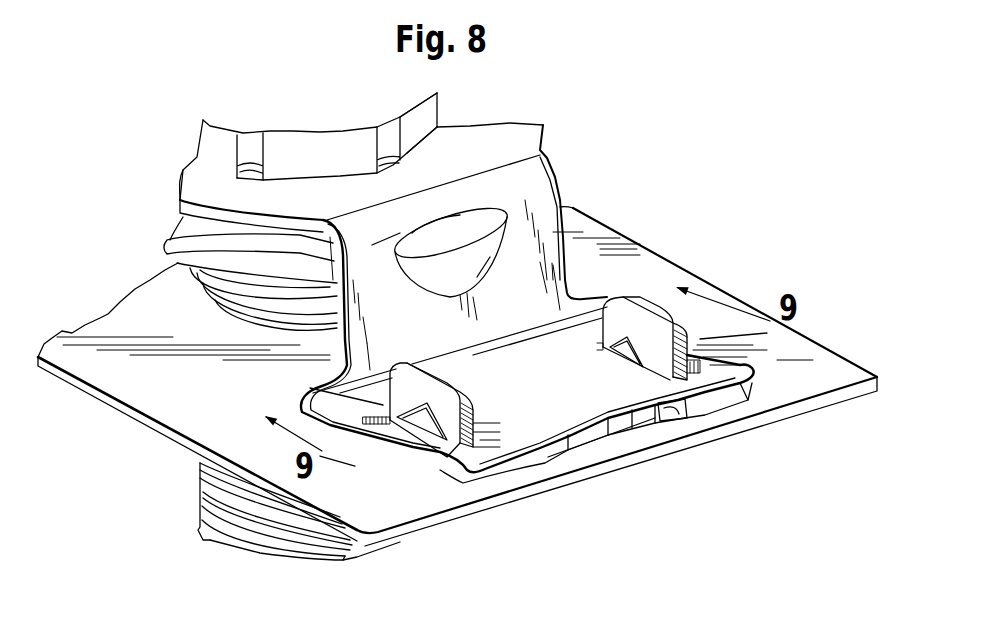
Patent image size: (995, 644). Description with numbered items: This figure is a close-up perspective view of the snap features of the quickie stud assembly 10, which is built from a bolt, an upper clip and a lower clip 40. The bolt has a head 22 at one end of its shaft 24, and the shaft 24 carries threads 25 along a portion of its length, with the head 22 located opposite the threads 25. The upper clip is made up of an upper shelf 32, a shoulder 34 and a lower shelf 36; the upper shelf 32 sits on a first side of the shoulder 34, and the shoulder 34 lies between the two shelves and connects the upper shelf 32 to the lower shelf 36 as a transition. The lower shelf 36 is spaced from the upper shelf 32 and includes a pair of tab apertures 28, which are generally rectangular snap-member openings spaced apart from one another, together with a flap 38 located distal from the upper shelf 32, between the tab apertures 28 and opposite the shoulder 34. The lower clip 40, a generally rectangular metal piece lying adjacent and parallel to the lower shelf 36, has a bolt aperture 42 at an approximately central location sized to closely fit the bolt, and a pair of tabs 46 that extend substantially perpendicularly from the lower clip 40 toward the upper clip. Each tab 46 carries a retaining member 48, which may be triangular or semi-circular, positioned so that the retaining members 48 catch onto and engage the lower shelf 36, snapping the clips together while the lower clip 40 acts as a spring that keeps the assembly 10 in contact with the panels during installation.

The quickie stud assembly 10 is at (667, 182).
The head 22 is at (430, 113).
The shaft 24 is at (197, 487).
The threads 25 is at (203, 537).
The tab aperture 28 is at (116, 388).
The upper shelf 32 is at (507, 130).
The shoulder 34 is at (553, 231).
The lower shelf 36 is at (727, 384).
The flap 38 is at (665, 412).
The lower clip 40 is at (630, 268).
The bolt aperture 42 is at (180, 282).
The tab 46 is at (480, 413).
The retaining member 48 is at (400, 447).